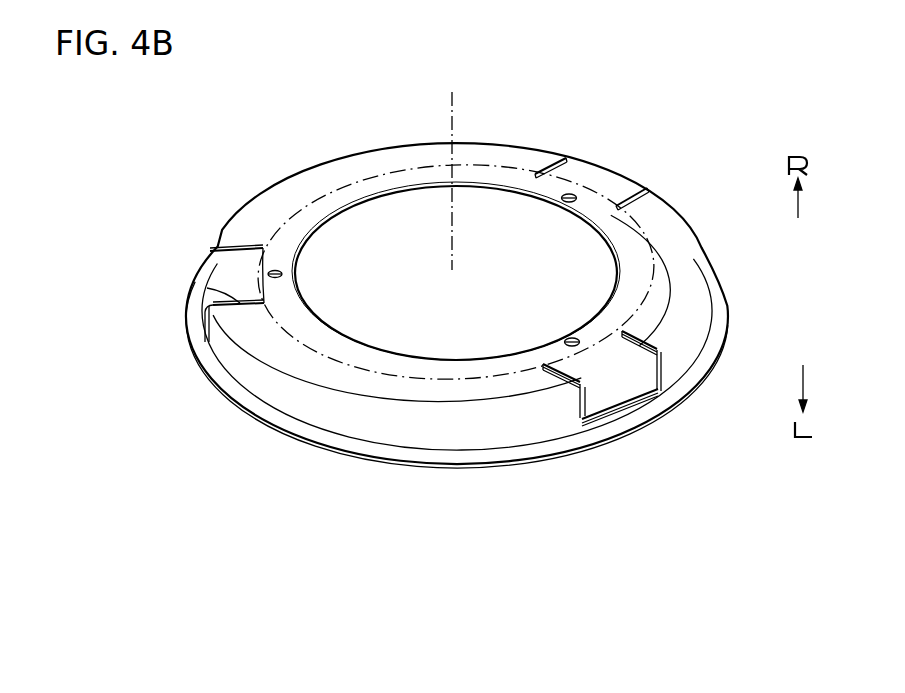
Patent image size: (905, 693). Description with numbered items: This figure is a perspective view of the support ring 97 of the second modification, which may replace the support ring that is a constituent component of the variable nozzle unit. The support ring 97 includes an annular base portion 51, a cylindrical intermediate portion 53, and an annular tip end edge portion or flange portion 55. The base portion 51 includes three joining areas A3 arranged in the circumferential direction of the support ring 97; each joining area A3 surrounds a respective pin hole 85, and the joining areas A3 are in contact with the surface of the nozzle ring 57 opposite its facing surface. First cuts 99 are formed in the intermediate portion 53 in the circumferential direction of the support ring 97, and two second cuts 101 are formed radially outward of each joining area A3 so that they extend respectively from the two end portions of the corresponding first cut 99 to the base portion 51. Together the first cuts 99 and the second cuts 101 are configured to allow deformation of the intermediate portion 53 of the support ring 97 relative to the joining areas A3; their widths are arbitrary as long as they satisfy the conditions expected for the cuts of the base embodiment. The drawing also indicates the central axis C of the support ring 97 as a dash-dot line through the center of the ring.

The base portion 51 is at (270, 197).
The intermediate portion 53 is at (355, 425).
The tip end edge portion 55 is at (498, 460).
The nozzle ring 57 is at (437, 382).
The pin hole 85 is at (285, 272).
The support ring 97 is at (336, 160).
The first cut 99 is at (600, 410).
The second cut 101 is at (245, 250).
The joining area A3 is at (303, 290).
The center axis C is at (455, 94).